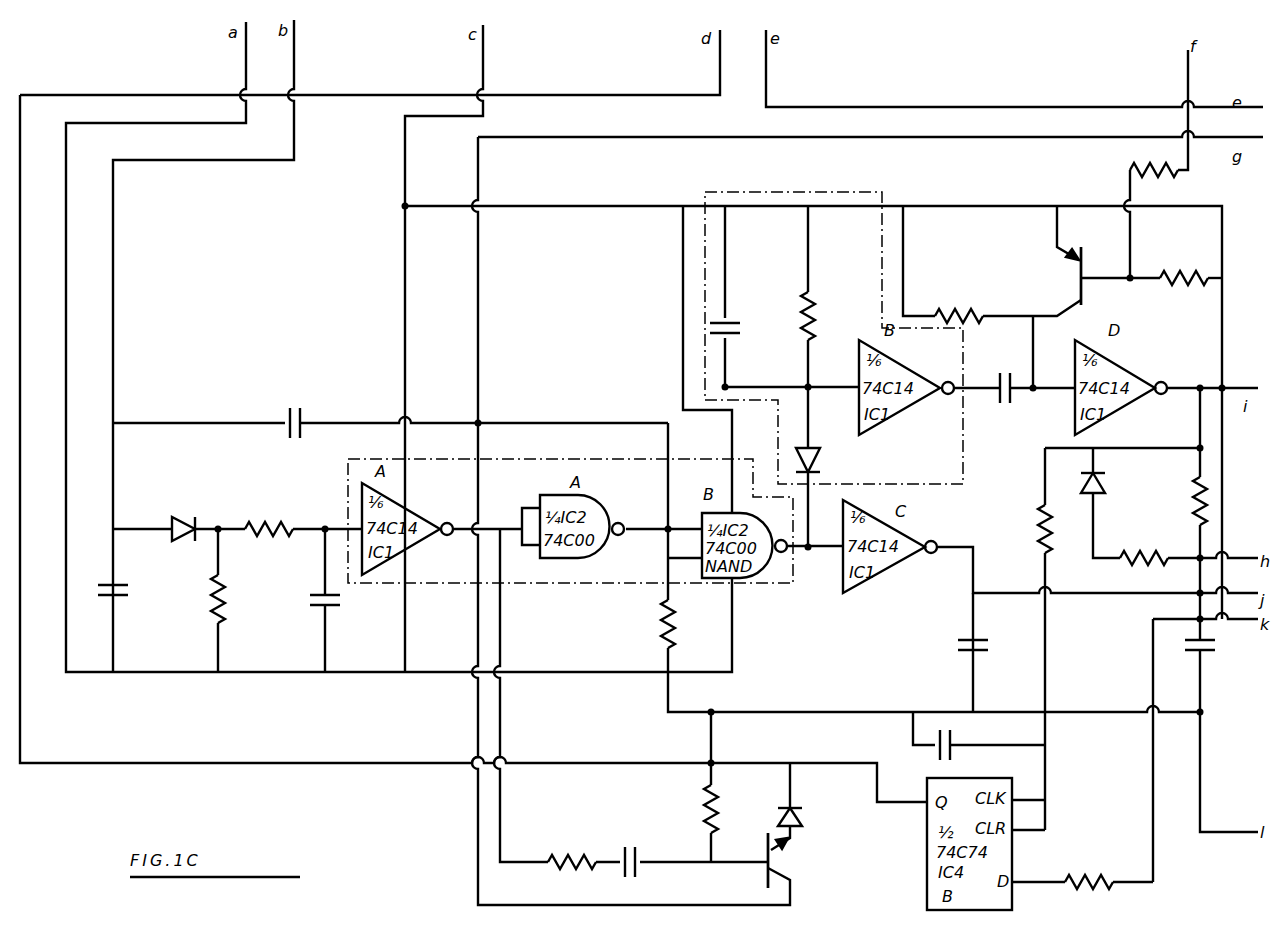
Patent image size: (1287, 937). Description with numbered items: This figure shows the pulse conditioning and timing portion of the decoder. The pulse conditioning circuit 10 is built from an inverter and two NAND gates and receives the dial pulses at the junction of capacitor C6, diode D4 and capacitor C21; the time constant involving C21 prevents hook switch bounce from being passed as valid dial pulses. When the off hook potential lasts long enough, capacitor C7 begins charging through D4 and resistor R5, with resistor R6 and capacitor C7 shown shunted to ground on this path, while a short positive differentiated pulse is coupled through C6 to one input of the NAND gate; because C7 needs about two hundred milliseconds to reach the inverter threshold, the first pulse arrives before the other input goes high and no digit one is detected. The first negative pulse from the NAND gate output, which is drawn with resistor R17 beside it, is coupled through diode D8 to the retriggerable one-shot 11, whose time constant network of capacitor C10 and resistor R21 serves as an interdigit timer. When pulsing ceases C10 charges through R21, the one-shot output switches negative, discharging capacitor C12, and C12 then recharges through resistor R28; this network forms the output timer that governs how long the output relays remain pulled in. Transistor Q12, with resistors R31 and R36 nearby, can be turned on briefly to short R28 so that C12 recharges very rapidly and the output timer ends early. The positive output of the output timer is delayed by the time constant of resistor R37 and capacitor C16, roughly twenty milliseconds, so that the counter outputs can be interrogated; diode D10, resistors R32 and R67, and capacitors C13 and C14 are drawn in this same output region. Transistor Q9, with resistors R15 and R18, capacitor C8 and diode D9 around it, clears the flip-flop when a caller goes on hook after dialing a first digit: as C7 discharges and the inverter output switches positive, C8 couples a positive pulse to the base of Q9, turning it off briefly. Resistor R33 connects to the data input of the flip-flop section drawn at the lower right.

The pulse conditioning circuit 10 is at (770, 597).
The retriggerable one-shot circuit 11 is at (963, 464).
The diode D4 is at (177, 516).
The resistor R5 is at (269, 510).
The resistor R6 2.2M R6 is at (239, 599).
The capacitor C21 is at (136, 586).
The capacitor C7 is at (345, 605).
The capacitor C6 is at (297, 399).
The resistor R17 5.1M R17 is at (691, 621).
The capacitor C10 is at (750, 309).
The resistor R21 is at (830, 313).
The diode D8 is at (822, 461).
The resistor R28 is at (959, 296).
The transistor Q12 is at (1060, 276).
The resistor R31 470 ohm R31 is at (1111, 161).
The resistor R36 10K R36 is at (1180, 263).
The capacitor C12 is at (1001, 370).
The diode D10 is at (1112, 480).
The resistor R37 is at (1178, 490).
The resistor R32 1K R32 is at (1144, 541).
The resistor R67 18K R67 is at (1018, 529).
The capacitor C13 .005MF C13 is at (944, 643).
The capacitor C14 .1MF C14 is at (965, 740).
The capacitor C16 is at (1219, 652).
The resistor R15 5.1K R15 is at (570, 842).
The capacitor C8 is at (644, 844).
The resistor R18 5.1K R18 is at (733, 809).
The diode D9 is at (808, 815).
The transistor Q9 is at (793, 860).
The resistor R33 10K R33 is at (1089, 865).